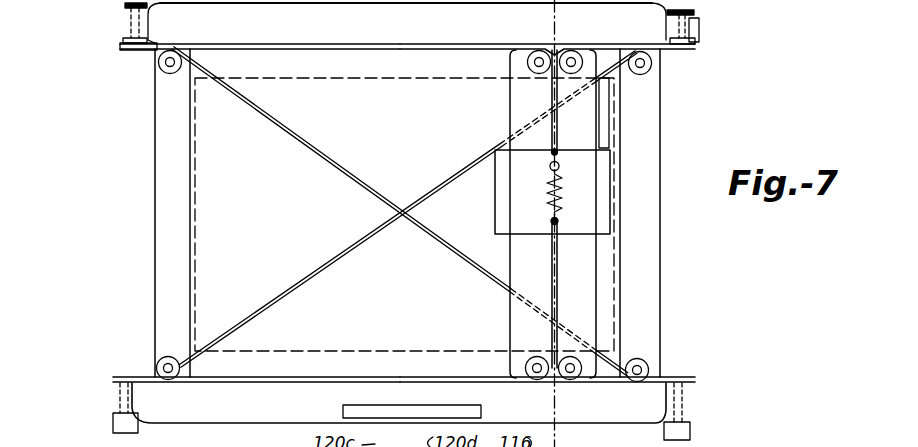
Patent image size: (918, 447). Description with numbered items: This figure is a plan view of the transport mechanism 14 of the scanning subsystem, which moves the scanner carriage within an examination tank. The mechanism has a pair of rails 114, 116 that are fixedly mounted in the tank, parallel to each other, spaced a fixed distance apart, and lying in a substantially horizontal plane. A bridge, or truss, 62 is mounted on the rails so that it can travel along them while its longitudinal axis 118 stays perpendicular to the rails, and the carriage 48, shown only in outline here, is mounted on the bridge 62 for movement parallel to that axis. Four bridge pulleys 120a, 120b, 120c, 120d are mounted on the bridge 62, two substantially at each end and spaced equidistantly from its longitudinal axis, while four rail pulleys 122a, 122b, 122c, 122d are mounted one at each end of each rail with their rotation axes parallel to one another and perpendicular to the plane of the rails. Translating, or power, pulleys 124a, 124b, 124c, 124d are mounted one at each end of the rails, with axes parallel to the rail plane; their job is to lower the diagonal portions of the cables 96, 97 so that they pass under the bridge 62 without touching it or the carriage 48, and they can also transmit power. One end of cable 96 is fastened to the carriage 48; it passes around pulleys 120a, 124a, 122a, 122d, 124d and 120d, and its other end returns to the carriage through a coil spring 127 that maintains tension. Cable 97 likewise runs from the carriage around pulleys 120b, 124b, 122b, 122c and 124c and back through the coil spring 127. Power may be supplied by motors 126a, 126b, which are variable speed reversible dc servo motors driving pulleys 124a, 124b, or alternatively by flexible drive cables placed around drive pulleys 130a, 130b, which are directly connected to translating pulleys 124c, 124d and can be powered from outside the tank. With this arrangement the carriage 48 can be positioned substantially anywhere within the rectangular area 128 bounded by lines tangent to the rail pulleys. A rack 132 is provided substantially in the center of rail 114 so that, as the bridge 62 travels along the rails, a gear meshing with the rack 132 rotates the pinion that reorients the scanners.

The transport mechanism 14 is at (138, 181).
The carriage 48 is at (612, 187).
The bridge 62 is at (610, 148).
The cable 96 is at (552, 328).
The cable 97 is at (557, 312).
The rail 114 is at (268, 424).
The rail 116 is at (388, 3).
The longitudinal axis of bridge 118 is at (551, 430).
The bridge pulley 120a is at (529, 378).
The bridge pulley 120b is at (564, 379).
The bridge pulley 120c is at (543, 50).
The bridge pulley 120d is at (569, 50).
The rail pulley 122a is at (172, 357).
The rail pulley 122b is at (644, 362).
The rail pulley 122c is at (172, 73).
The rail pulley 122d is at (645, 74).
The translating pulley 124a is at (122, 377).
The translating pulley 124b is at (694, 379).
The translating pulley 124c is at (134, 50).
The translating pulley 124d is at (686, 50).
The motor 126a is at (113, 423).
The motor 126b is at (690, 432).
The coil spring 127 is at (560, 193).
The rectangular area 128 is at (193, 237).
The drive pulley 130a is at (127, 6).
The drive pulley 130b is at (694, 10).
The rack 132 is at (345, 405).